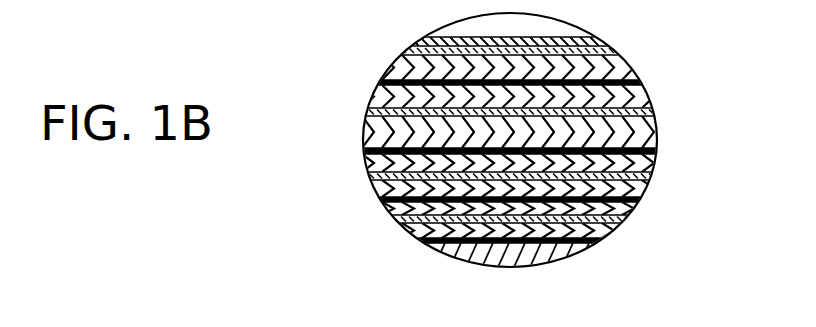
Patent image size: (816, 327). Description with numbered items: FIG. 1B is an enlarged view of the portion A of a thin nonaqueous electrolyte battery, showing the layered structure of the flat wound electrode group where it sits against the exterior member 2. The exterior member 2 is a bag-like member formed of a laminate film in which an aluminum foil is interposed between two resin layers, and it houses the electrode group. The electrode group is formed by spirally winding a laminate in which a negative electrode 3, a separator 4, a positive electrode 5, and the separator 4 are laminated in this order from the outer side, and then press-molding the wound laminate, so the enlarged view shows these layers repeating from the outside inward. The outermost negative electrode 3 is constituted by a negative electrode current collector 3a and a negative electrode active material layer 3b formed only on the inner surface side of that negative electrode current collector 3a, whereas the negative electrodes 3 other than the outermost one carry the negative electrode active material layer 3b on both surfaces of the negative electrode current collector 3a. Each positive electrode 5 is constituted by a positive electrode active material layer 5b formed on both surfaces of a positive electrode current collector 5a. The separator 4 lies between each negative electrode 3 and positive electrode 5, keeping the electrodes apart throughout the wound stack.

The portion A is at (446, 38).
The exterior member 2 is at (592, 46).
The negative electrode 3 is at (693, 15).
The negative electrode current collector 3a is at (625, 56).
The negative electrode active material layer 3b is at (628, 69).
The separator 4 is at (385, 83).
The positive electrode 5 is at (722, 72).
The positive electrode current collector 5a is at (656, 112).
The positive electrode active material layer 5b is at (655, 93).